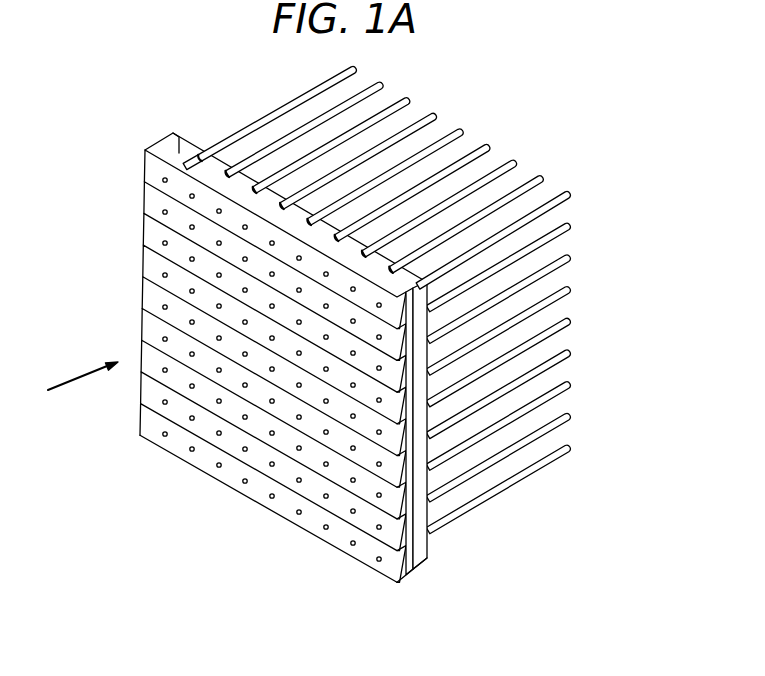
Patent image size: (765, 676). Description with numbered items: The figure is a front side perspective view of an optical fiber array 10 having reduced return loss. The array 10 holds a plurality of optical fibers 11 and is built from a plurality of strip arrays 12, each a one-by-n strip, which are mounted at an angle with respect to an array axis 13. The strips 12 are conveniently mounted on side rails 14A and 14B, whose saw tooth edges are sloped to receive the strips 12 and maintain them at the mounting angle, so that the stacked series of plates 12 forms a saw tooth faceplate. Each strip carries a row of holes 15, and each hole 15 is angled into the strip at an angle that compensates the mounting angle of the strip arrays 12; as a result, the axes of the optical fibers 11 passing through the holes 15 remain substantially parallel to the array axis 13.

The optical fiber array 10 is at (341, 352).
The optical fibers 11 is at (545, 278).
The strip arrays 12 is at (140, 294).
The array axis 13 is at (73, 380).
The side rail 14A is at (417, 574).
The side rail 14B is at (168, 137).
The hole 15 is at (272, 432).